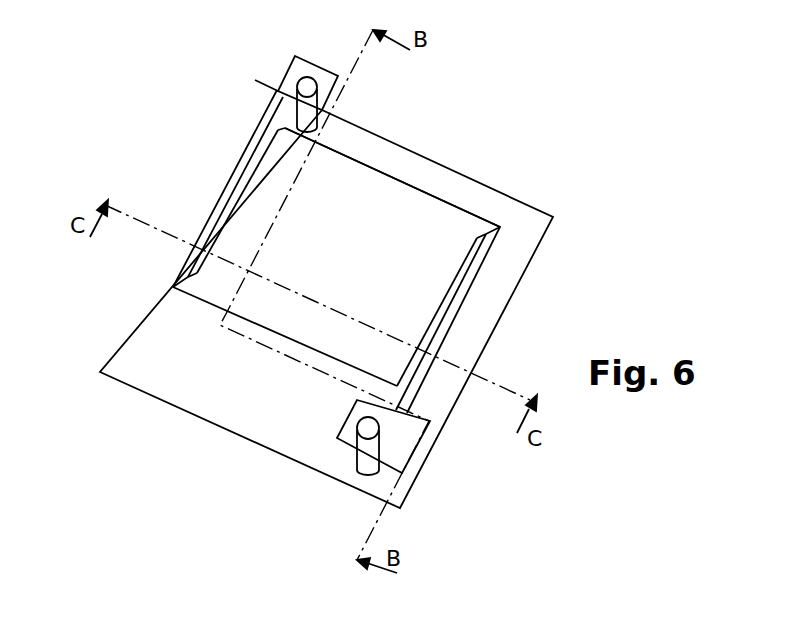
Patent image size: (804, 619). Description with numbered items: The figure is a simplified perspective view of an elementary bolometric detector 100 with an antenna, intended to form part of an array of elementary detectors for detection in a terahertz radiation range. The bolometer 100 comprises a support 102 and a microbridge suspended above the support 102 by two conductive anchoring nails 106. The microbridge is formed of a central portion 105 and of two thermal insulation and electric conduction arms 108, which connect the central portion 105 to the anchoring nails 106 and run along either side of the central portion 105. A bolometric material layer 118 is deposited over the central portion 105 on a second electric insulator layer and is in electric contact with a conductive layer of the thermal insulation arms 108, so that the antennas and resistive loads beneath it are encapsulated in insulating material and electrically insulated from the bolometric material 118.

The elementary bolometric detector 100 is at (213, 45).
The support 102 is at (153, 362).
The central portion 105 is at (383, 197).
The conductive anchoring nails 106 is at (297, 90).
The thermal insulation and electric conduction arms 108 is at (233, 173).
The bolometric material layer 118 is at (445, 228).